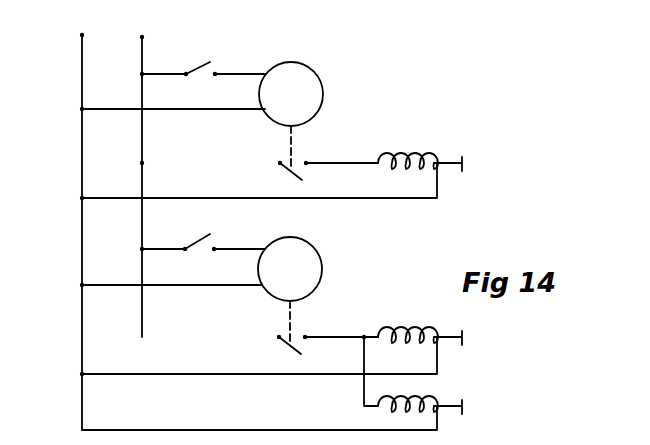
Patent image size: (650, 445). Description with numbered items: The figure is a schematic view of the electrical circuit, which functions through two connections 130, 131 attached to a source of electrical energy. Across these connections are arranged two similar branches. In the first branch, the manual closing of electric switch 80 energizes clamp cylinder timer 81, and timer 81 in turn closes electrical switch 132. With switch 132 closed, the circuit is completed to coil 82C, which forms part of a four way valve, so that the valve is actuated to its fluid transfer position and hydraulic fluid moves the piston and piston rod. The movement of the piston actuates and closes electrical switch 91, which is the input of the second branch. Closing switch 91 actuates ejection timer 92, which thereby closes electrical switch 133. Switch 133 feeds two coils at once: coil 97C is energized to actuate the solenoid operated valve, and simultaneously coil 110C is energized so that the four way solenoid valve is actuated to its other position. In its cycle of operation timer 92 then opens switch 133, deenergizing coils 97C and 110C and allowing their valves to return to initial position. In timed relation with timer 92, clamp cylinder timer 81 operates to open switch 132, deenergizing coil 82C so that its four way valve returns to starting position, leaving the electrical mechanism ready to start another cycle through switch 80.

The connection 130 is at (82, 35).
The connection 131 is at (142, 37).
The electric switch 80 is at (197, 70).
The clamp cylinder timer 81 is at (316, 84).
The coil 82C is at (414, 160).
The electrical switch 132 is at (291, 169).
The electrical switch 91 is at (196, 246).
The ejection timer 92 is at (312, 280).
The coil 97C is at (410, 336).
The electrical switch 133 is at (290, 343).
The coil 110C is at (427, 398).